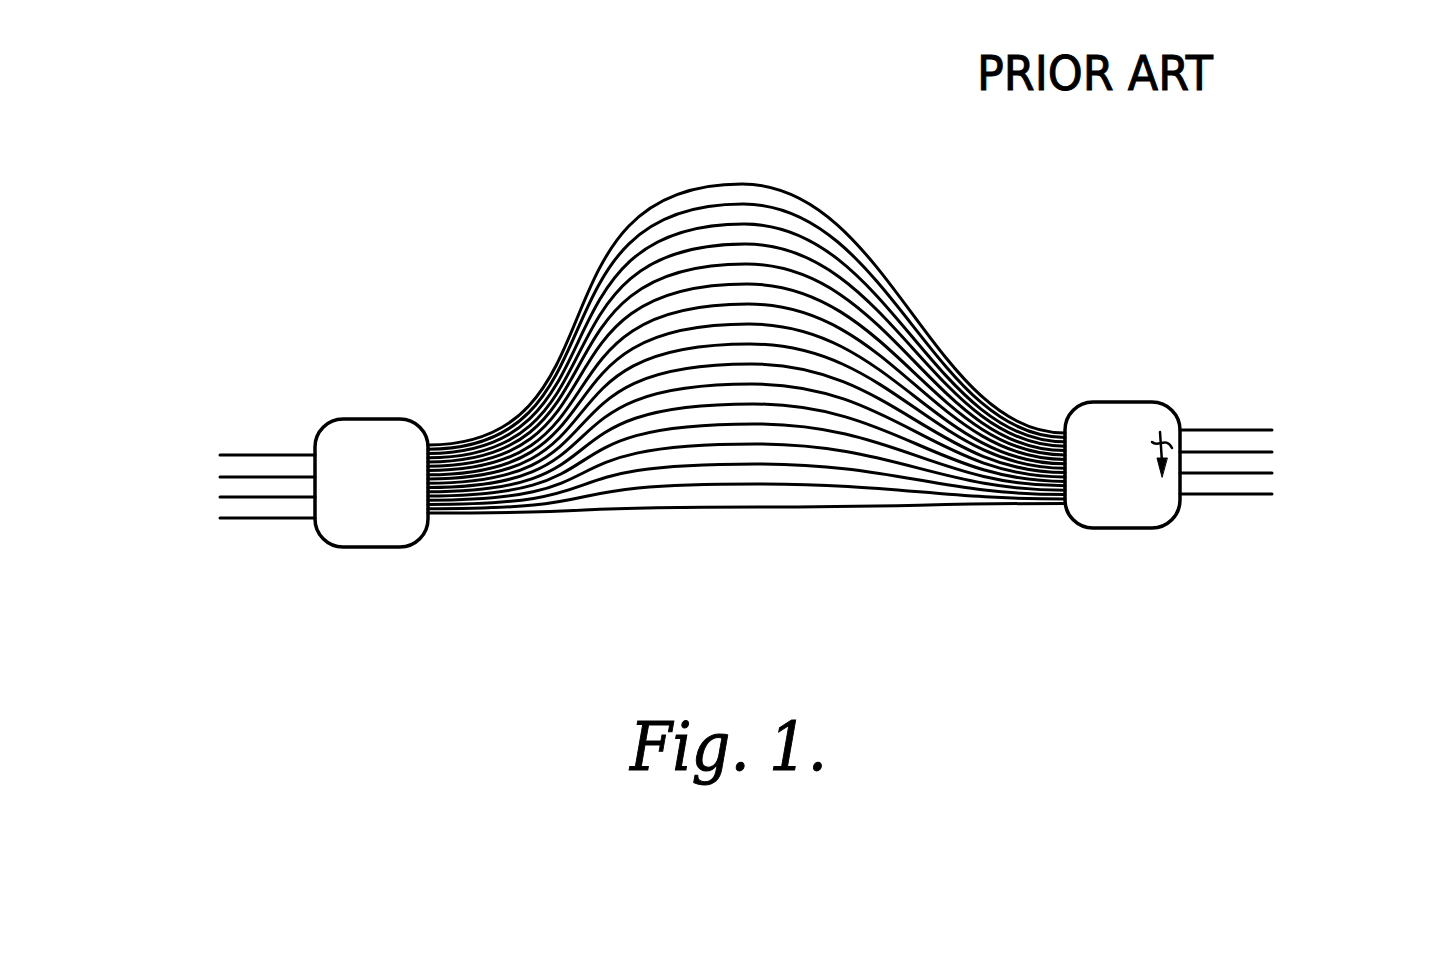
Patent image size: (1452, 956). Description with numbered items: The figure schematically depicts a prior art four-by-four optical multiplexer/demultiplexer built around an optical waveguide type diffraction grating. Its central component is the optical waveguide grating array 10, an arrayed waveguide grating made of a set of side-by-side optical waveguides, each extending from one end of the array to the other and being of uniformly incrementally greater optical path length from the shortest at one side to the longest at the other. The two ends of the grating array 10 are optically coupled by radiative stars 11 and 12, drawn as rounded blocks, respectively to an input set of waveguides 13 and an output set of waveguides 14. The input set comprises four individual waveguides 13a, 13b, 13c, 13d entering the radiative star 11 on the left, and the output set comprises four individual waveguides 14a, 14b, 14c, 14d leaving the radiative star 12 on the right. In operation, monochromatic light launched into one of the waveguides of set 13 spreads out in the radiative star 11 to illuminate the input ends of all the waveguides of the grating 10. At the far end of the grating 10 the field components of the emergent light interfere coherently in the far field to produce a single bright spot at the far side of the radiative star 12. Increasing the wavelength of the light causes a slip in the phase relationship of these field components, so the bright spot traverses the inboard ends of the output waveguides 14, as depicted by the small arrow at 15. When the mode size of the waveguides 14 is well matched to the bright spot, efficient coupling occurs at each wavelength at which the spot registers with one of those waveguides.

The optical waveguide grating array 10 is at (730, 277).
The radiative star 11 is at (395, 462).
The radiative star 12 is at (1105, 428).
The input set of waveguides 13 is at (221, 459).
The input waveguide 13a is at (225, 453).
The input waveguide 13b is at (225, 473).
The input waveguide 13c is at (222, 500).
The input waveguide 13d is at (233, 522).
The output set of waveguides 14 is at (1288, 435).
The output waveguide 14a is at (1265, 427).
The output waveguide 14b is at (1267, 450).
The output waveguide 14c is at (1270, 473).
The output waveguide 14d is at (1255, 495).
The bright spot traverse 15 is at (1160, 437).